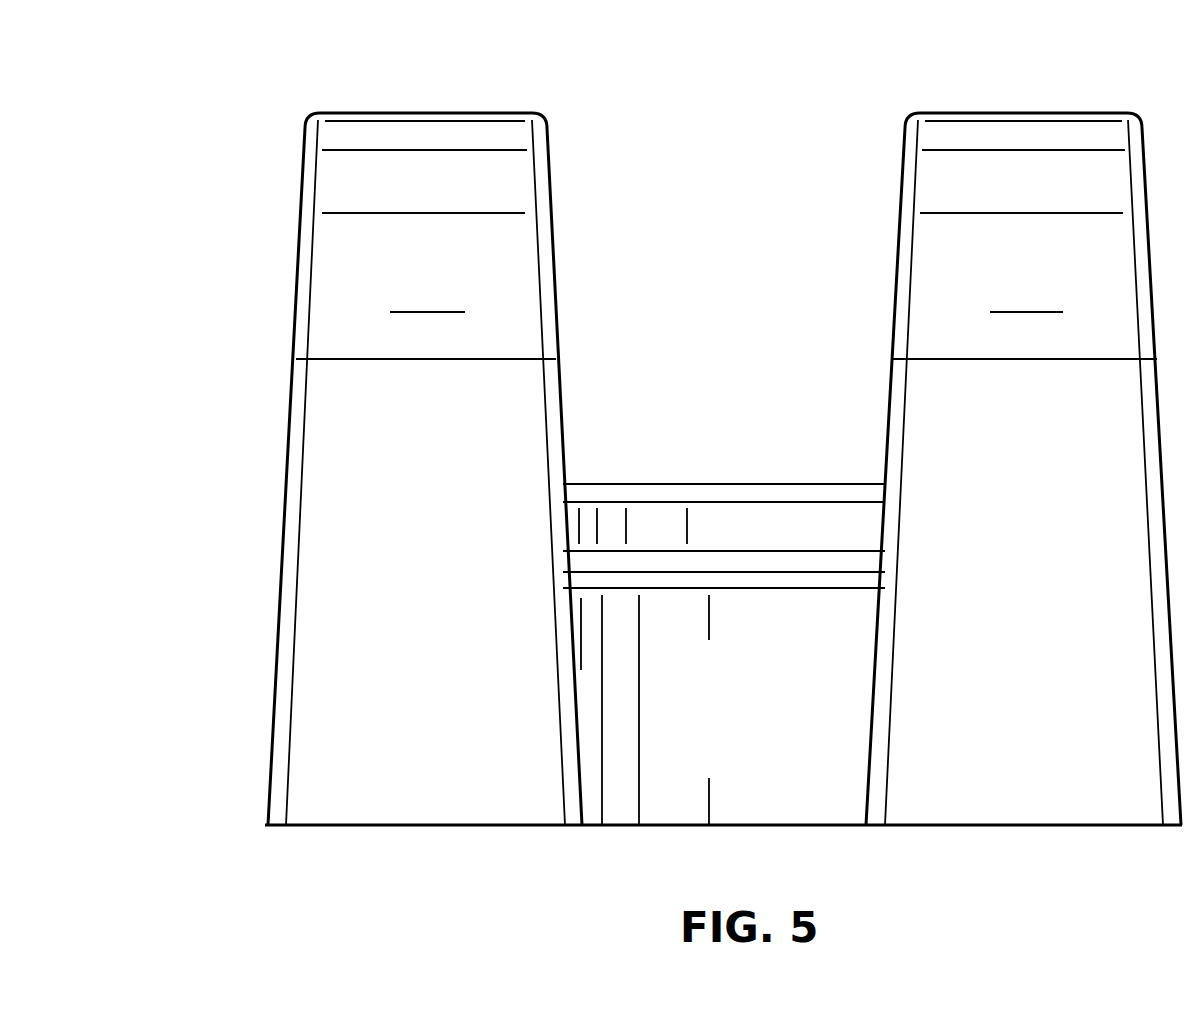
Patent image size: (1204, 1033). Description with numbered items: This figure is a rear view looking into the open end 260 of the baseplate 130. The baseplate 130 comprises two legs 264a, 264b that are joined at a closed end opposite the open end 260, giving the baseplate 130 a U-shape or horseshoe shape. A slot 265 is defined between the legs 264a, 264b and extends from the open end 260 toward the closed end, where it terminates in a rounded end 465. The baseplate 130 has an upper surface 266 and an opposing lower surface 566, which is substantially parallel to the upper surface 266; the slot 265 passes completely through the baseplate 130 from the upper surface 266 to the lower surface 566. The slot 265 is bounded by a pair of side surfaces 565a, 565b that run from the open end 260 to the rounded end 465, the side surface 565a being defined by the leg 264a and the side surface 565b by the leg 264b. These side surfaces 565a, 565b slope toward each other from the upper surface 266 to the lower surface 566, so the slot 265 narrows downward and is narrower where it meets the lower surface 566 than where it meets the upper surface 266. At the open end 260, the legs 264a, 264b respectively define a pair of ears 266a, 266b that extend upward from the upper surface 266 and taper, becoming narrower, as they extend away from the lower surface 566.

The baseplate 130 is at (268, 136).
The lower surface 566 is at (434, 829).
The ear 266b is at (427, 175).
The ear 266a is at (1026, 183).
The upper surface 266 is at (741, 482).
The slot 265 is at (708, 670).
The rounded end 465 is at (827, 628).
The side surface 565b is at (580, 715).
The side surface 565a is at (871, 692).
The open end 260 is at (696, 645).
The leg 264b is at (356, 765).
The leg 264a is at (1043, 765).